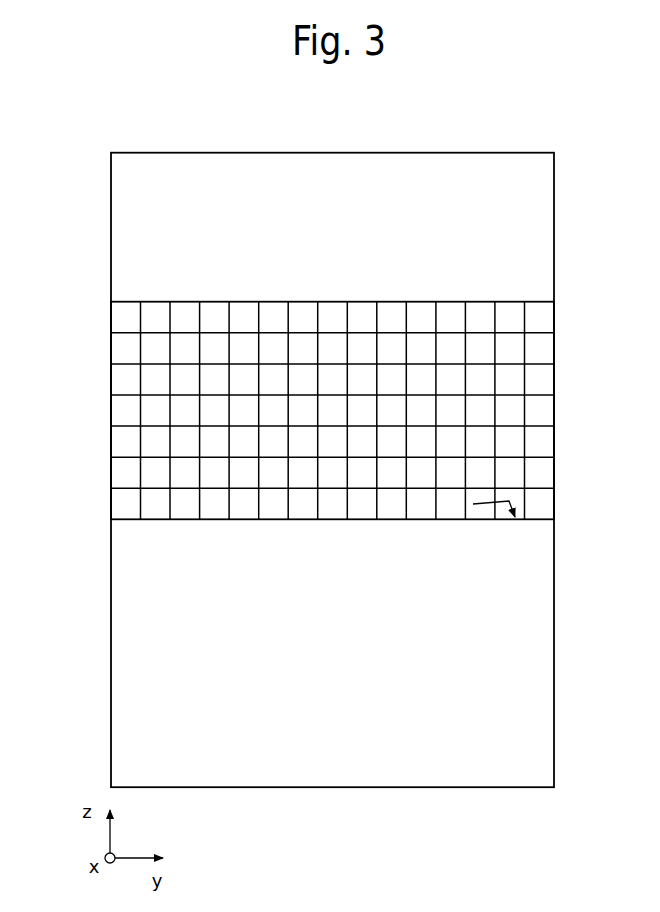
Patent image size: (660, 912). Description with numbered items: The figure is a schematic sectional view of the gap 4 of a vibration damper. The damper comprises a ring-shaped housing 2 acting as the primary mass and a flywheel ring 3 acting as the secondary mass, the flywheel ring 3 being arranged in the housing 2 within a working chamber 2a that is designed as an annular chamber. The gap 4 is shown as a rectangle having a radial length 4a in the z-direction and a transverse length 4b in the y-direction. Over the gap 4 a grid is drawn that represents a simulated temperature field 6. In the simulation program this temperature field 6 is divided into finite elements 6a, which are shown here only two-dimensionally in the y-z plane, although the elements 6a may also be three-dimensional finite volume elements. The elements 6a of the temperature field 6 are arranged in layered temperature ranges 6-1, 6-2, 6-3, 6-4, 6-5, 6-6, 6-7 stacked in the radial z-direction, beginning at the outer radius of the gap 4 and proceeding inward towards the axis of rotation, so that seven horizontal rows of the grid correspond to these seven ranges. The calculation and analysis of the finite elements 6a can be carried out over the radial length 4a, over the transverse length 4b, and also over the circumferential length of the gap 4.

The housing 2 is at (405, 198).
The working chamber 2a is at (473, 504).
The flywheel ring 3 is at (518, 730).
The gap 4 is at (321, 373).
The radial length 4a is at (292, 374).
The transverse length 4b is at (97, 520).
The temperature field 6 is at (321, 373).
The finite element 6a is at (502, 348).
The temperature range 6-1 is at (565, 317).
The temperature range 6-2 is at (565, 348).
The temperature range 6-3 is at (565, 379).
The temperature range 6-4 is at (565, 410).
The temperature range 6-5 is at (565, 441).
The temperature range 6-6 is at (565, 472).
The temperature range 6-7 is at (565, 503).